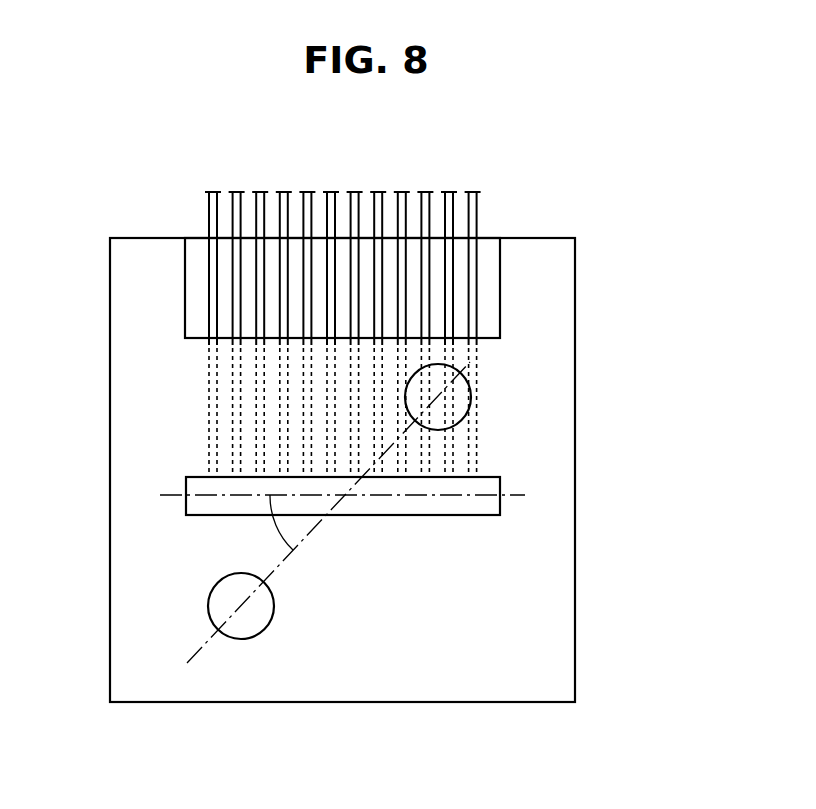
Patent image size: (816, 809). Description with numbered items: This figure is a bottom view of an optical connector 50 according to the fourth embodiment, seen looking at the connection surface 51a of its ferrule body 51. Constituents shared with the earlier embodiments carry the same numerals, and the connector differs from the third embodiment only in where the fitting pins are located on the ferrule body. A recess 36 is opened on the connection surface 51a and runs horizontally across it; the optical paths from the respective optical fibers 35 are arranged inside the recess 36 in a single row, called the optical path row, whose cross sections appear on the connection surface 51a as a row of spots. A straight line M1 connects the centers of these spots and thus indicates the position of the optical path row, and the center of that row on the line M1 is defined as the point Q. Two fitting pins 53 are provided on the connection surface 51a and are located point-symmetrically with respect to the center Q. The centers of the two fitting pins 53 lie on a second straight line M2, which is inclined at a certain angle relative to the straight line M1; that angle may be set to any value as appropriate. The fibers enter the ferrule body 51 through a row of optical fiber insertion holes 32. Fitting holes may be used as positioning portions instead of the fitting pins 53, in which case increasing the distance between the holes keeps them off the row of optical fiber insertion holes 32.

The optical fibers 35 is at (379, 192).
The optical fiber insertion holes 32 is at (225, 378).
The recess 36 is at (424, 500).
The optical connector 50 is at (633, 536).
The ferrule body 51 is at (548, 467).
The connection surface 51a is at (548, 297).
The fitting pins 53 is at (470, 385).
The center of optical path row Q is at (344, 497).
The straight line M1 is at (489, 500).
The straight line M2 is at (200, 650).